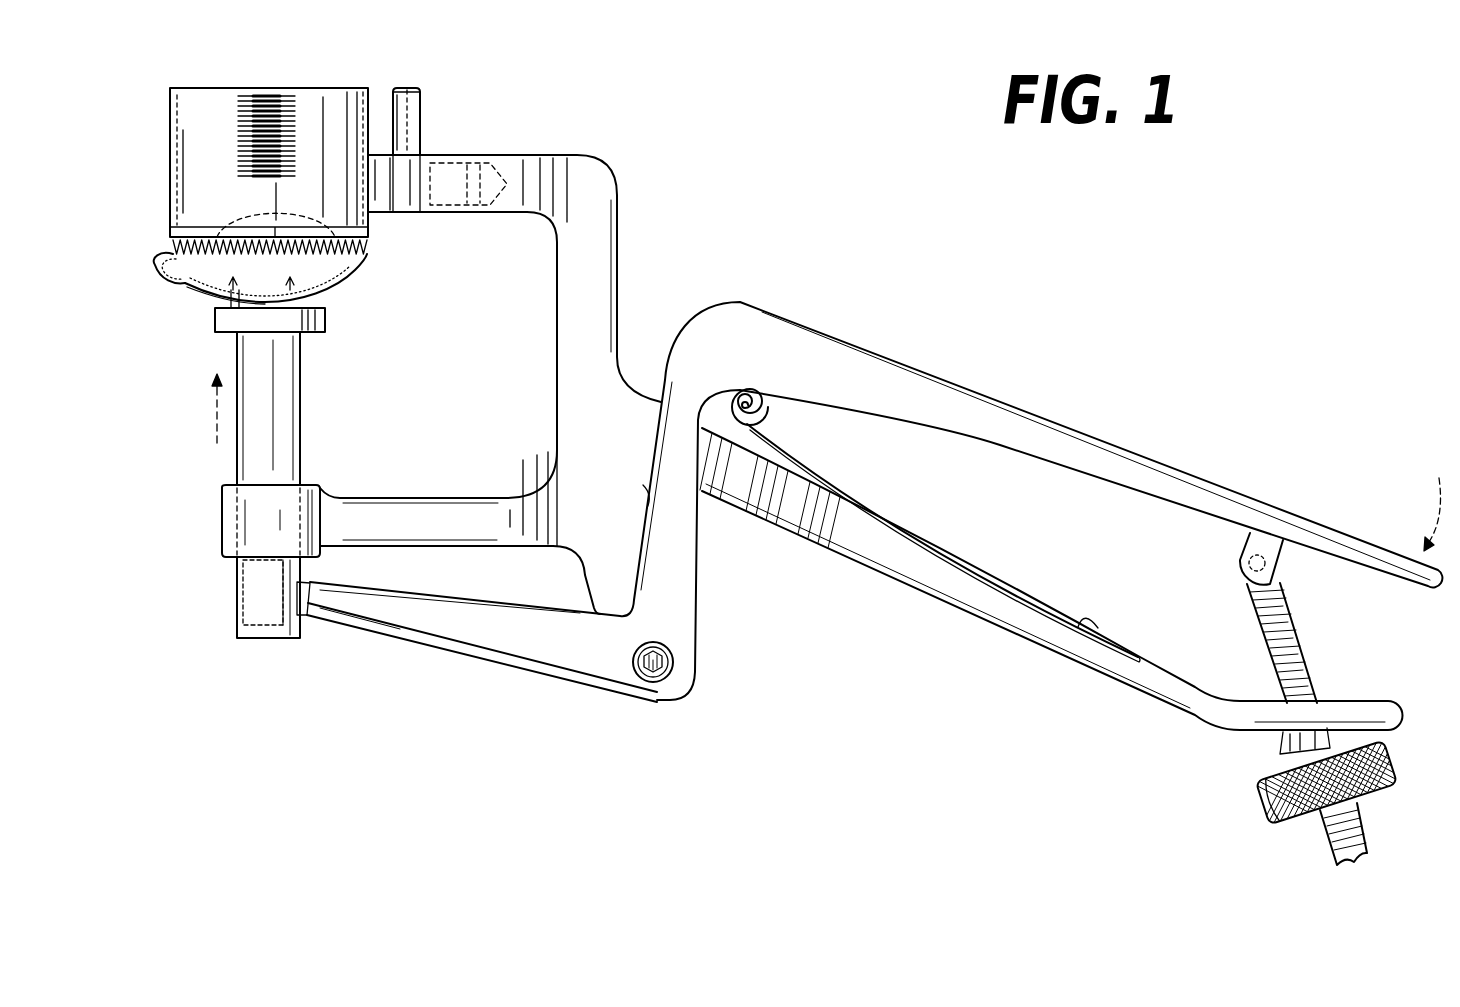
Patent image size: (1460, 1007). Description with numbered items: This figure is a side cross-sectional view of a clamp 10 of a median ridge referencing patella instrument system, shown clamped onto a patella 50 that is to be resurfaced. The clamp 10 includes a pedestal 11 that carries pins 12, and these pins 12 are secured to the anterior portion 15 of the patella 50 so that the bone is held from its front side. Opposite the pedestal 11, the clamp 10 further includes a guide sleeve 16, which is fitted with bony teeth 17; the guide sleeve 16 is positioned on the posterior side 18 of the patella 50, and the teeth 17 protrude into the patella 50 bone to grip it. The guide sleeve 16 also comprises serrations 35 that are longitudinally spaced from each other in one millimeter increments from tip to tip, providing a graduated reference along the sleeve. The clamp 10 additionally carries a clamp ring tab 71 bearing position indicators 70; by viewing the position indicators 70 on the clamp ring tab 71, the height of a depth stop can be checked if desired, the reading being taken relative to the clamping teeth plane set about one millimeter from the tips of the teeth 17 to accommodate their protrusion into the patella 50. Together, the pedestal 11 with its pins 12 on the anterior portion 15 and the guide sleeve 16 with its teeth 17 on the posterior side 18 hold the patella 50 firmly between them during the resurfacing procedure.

The clamp 10 is at (458, 81).
The pedestal 11 is at (306, 356).
The pins 12 is at (220, 302).
The anterior portion 15 is at (187, 287).
The guide sleeve 16 is at (170, 153).
The bony teeth 17 is at (170, 275).
The posterior side 18 is at (267, 268).
The serrations 35 is at (270, 92).
The patella 50 is at (366, 258).
The position indicators 70 is at (421, 101).
The clamp ring tab 71 is at (410, 88).